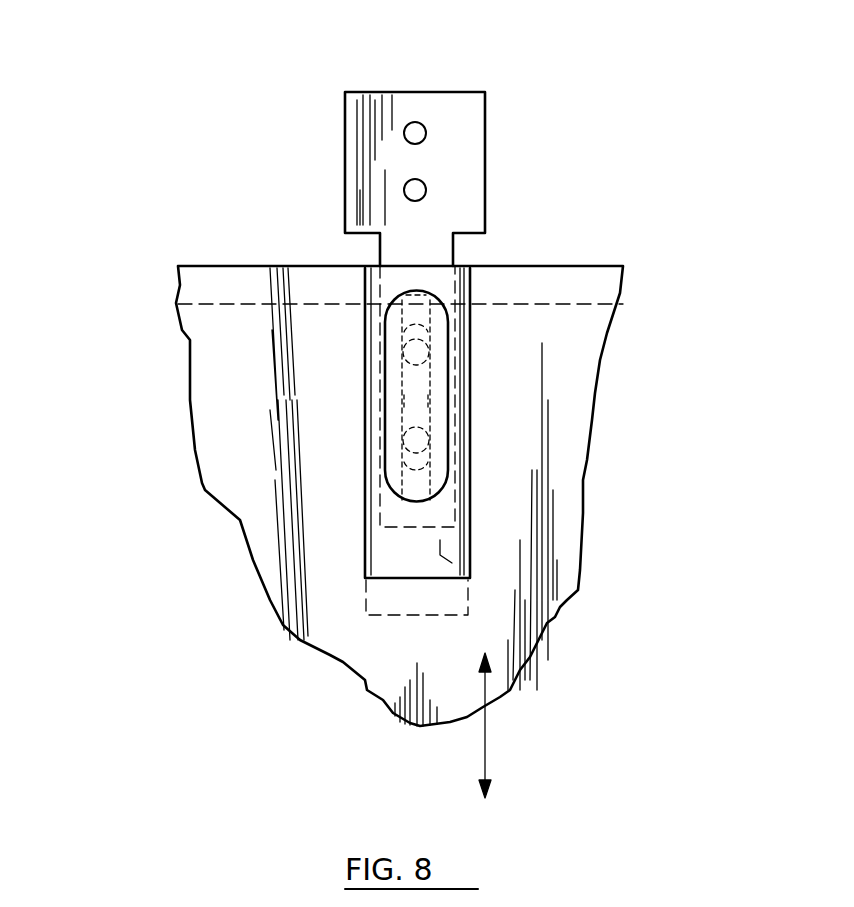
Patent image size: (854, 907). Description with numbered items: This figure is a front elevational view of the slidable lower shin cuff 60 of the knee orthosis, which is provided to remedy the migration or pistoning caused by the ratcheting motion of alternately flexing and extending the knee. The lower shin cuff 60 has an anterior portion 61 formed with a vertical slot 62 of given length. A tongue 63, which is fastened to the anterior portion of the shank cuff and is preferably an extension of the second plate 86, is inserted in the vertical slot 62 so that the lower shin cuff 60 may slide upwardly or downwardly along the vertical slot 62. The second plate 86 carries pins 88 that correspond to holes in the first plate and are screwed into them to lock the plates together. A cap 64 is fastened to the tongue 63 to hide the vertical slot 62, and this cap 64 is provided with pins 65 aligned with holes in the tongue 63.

The lower shin cuff 60 is at (216, 486).
The anterior portion 61 is at (395, 637).
The vertical slot 62 is at (398, 312).
The tongue 63 is at (443, 551).
The cap 64 is at (432, 404).
The pins 65 is at (420, 360).
The second plate 86 is at (458, 97).
The pins 88 is at (427, 133).